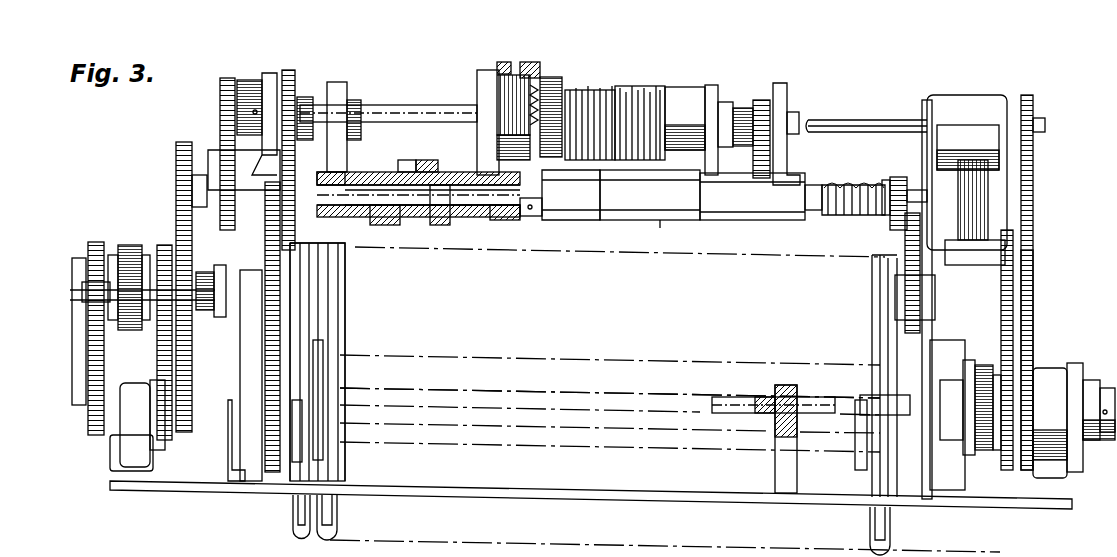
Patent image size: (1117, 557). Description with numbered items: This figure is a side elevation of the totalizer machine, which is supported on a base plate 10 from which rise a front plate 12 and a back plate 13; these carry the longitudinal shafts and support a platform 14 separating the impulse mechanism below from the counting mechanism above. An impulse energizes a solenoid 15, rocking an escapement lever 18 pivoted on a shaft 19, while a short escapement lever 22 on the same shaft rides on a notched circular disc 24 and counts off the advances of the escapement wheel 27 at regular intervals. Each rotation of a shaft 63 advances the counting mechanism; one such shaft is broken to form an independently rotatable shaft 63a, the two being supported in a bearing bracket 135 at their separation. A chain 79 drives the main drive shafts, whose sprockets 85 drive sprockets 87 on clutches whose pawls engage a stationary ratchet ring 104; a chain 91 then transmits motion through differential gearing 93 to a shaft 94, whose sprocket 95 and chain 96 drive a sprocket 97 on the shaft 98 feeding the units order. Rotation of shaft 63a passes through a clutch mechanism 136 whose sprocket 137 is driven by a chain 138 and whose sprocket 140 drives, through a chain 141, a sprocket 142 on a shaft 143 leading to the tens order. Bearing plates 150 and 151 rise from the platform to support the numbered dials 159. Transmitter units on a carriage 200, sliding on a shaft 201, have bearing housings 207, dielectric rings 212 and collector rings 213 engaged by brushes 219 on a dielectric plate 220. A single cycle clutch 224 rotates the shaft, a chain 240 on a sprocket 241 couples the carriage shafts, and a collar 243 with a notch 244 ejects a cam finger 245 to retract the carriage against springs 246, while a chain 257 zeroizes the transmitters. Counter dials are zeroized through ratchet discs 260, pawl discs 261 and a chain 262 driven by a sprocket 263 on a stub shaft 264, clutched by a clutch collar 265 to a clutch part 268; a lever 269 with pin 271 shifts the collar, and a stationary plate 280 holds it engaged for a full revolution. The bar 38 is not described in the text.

The base plate 10 is at (600, 493).
The front plate 12 is at (922, 466).
The back plate 13 is at (250, 455).
The platform 14 is at (370, 172).
The solenoid 15 is at (340, 520).
The escapement lever 18 is at (338, 476).
The shaft 19 is at (513, 390).
The short escapement lever 22 is at (328, 373).
The circular disc 24 is at (297, 465).
The escapement wheel 27 is at (320, 243).
The frame plate 38 is at (340, 250).
The shaft 63 is at (733, 403).
The axially aligned shaft 63a is at (800, 412).
The chain 79 is at (265, 230).
The sprocket 85 is at (176, 158).
The sprocket 87 is at (193, 440).
The chain 91 is at (95, 405).
The differential gearing 93 is at (130, 245).
The shaft 94 is at (165, 245).
The sprocket 95 is at (208, 272).
The chain 96 is at (220, 135).
The sprocket 97 is at (265, 80).
The shaft 98 is at (393, 105).
The ratchet ring 104 is at (210, 455).
The bearing bracket 135 is at (786, 493).
The clutch mechanism 136 is at (1062, 395).
The sprocket 137 is at (1001, 445).
The chain 138 is at (1014, 330).
The sprocket 140 is at (1010, 450).
The chain 141 is at (1034, 300).
The sprocket 142 is at (1034, 110).
The shaft 143 is at (1046, 125).
The bearing plate 150 is at (355, 100).
The bearing plate 151 is at (477, 96).
The numbered dial 159 is at (500, 92).
The carriage 200 is at (710, 220).
The shaft 201 is at (842, 190).
The bearing housing 207 is at (680, 95).
The dielectric ring 212 is at (590, 90).
The collector ring 213 is at (640, 86).
The brush 219 is at (628, 176).
The dielectric plate 220 is at (668, 220).
The single cycle clutch 224 is at (1000, 172).
The chain 240 is at (898, 177).
The sprocket 241 is at (884, 216).
The collar 243 is at (520, 218).
The notch 244 is at (538, 216).
The cam finger 245 is at (548, 186).
The spring 246 is at (830, 220).
The chain 257 is at (765, 100).
The ratchet disc 260 is at (336, 82).
The pawl disc 261 is at (308, 97).
The chain 262 is at (300, 48).
The sprocket 263 is at (340, 218).
The stub shaft 264 is at (380, 218).
The clutch collar 265 is at (440, 222).
The clutch part 268 is at (465, 218).
The lever 269 is at (425, 162).
The pin 271 is at (435, 185).
The stationary plate 280 is at (405, 162).